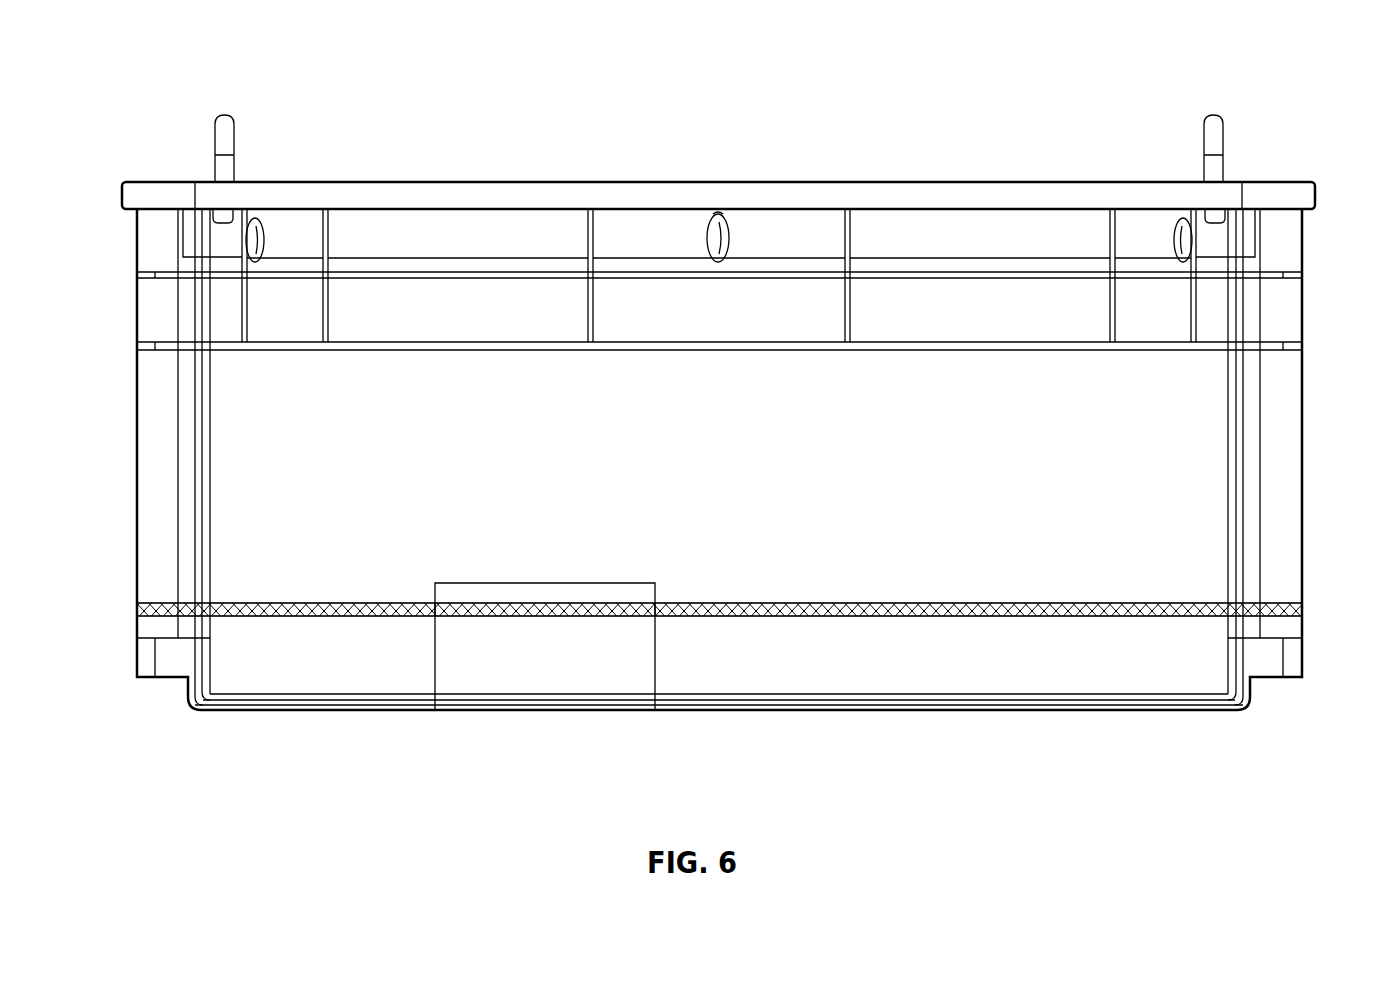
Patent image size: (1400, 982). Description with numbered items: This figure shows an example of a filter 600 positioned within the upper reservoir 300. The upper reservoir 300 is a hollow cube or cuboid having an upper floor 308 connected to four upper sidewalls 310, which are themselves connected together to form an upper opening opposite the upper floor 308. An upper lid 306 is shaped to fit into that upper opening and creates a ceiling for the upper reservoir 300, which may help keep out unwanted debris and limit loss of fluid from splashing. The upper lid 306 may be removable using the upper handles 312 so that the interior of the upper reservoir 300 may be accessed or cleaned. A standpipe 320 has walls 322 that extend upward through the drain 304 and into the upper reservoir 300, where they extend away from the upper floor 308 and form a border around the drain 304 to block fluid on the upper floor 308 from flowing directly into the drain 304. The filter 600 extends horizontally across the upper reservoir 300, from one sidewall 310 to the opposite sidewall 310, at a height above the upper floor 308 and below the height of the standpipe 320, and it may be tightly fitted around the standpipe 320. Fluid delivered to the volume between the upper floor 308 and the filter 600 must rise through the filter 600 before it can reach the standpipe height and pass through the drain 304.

The upper reservoir 300 is at (162, 58).
The drain 304 is at (505, 750).
The upper lid 306 is at (1034, 196).
The upper floor 308 is at (761, 712).
The upper sidewalls 310 is at (137, 466).
The upper handles 312 is at (218, 128).
The standpipe 320 is at (532, 560).
The walls 322 is at (446, 656).
The filter 600 is at (989, 628).